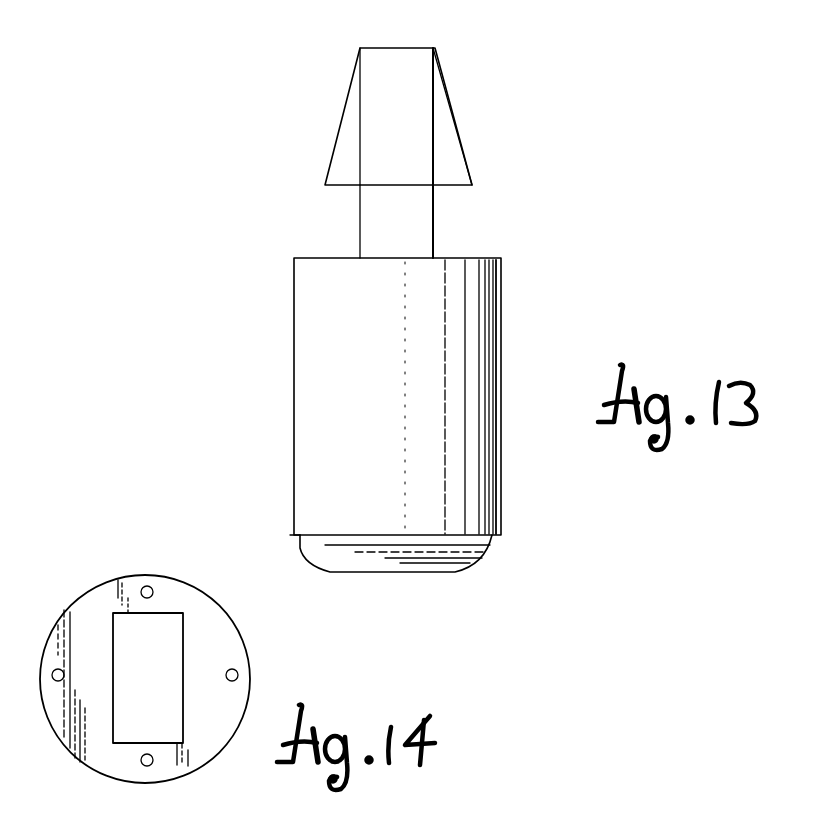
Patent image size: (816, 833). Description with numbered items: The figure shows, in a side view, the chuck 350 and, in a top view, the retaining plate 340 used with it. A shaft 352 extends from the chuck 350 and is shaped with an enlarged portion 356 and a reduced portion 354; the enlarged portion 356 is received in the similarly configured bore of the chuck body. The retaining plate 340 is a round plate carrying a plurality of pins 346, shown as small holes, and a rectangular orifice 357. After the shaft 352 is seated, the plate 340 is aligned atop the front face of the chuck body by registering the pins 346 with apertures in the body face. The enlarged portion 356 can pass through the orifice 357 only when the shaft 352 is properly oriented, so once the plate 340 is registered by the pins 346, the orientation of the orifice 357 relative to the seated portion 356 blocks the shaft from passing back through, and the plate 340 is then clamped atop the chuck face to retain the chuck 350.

In FIG. 13, the chuck 350 is at (313, 396).
In FIG. 13, the shaft 352 is at (315, 133).
In FIG. 13, the reduced portion 354 is at (358, 218).
In FIG. 13, the enlarged portion 356 is at (452, 100).
In FIG. 14, the retaining plate 340 is at (88, 617).
In FIG. 14, the orifice 357 is at (178, 630).
In FIG. 14, the pins 346 is at (237, 671).